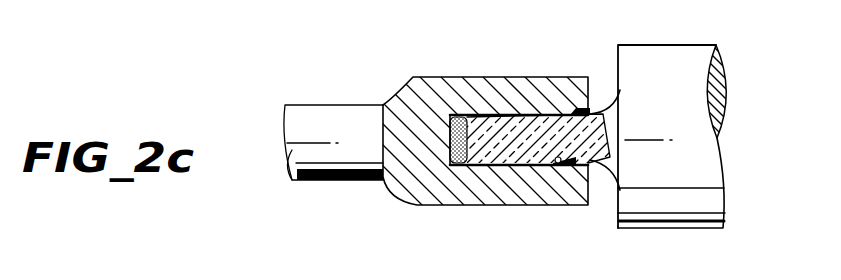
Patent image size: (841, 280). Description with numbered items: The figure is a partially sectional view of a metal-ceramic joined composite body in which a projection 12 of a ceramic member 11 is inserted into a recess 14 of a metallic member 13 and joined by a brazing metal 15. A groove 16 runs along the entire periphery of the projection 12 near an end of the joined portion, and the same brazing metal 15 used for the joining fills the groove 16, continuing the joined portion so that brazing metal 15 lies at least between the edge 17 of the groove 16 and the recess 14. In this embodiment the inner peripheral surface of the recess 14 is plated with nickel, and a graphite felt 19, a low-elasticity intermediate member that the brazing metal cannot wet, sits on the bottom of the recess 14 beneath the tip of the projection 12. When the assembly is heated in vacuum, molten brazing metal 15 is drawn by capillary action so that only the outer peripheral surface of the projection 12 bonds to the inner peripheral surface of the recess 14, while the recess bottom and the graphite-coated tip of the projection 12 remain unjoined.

The ceramic member 11 is at (663, 63).
The projection 12 is at (508, 127).
The metallic member 13 is at (324, 115).
The recess 14 is at (478, 187).
The brazing metal 15 is at (517, 165).
The groove 16 is at (592, 113).
The edge of the groove 17 is at (555, 164).
The graphite felt 19 is at (457, 117).